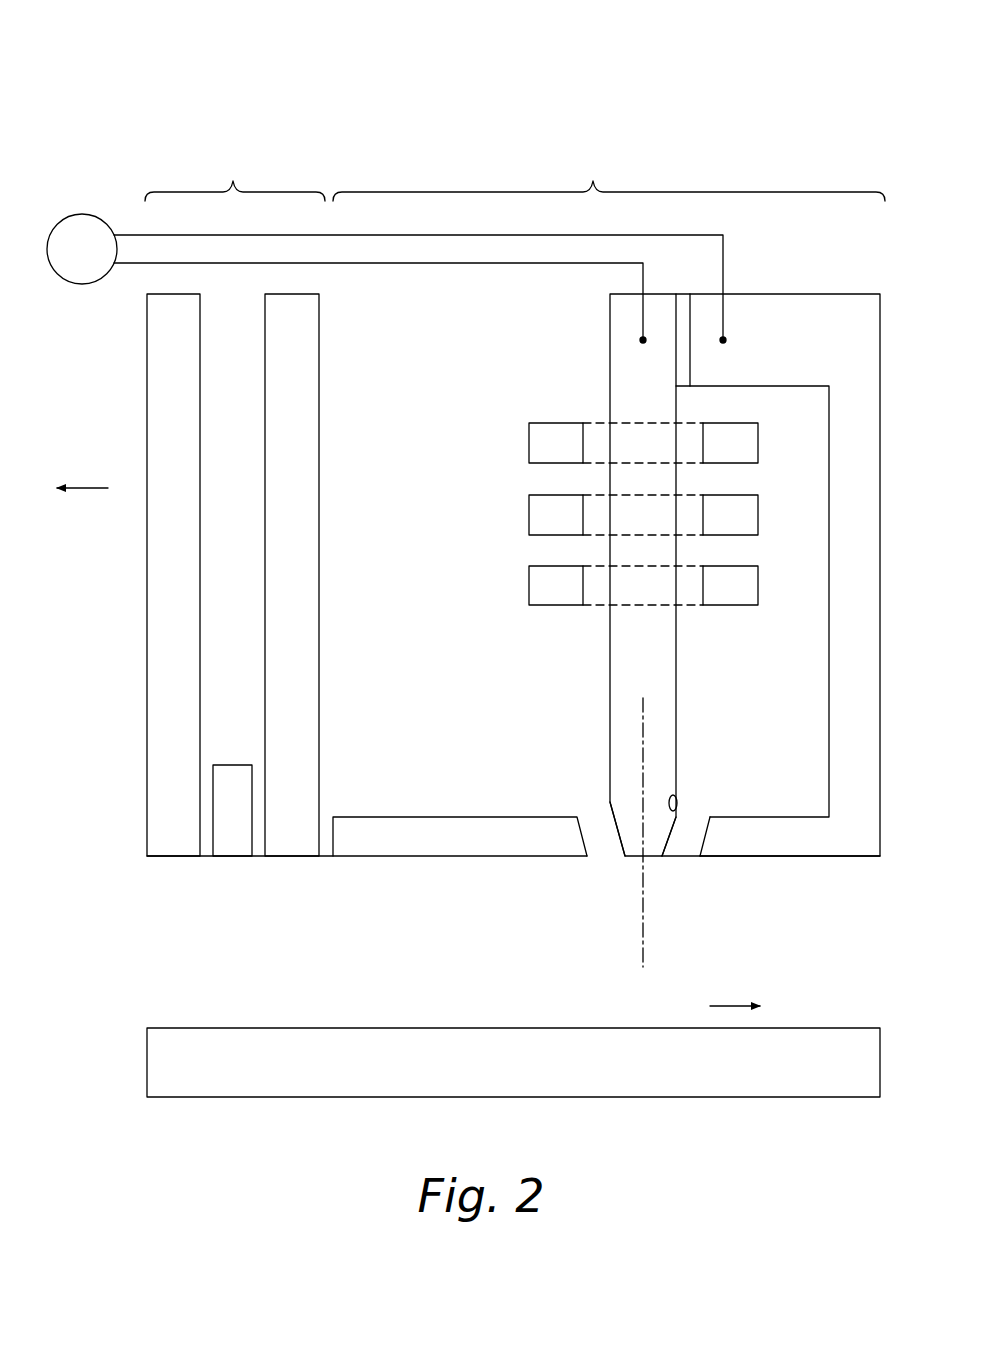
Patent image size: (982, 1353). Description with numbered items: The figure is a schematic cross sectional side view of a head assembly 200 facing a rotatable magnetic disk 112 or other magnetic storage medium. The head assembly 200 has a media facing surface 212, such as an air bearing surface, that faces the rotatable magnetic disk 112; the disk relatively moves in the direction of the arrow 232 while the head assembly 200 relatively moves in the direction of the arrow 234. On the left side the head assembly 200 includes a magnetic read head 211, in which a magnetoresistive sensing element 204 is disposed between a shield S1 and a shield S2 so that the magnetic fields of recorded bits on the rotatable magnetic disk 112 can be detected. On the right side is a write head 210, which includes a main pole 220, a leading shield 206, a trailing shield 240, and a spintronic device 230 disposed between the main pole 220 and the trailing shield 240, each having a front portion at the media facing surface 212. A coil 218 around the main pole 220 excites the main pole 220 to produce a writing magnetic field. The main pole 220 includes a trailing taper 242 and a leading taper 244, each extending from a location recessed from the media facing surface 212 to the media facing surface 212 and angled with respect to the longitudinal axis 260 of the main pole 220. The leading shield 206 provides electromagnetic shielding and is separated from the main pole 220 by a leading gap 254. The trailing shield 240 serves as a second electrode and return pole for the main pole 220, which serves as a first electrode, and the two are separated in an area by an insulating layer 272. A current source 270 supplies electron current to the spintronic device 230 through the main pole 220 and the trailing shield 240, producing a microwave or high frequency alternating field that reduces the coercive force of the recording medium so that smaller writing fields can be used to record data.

The head assembly 200 is at (143, 38).
The current source 270 is at (82, 213).
The magnetic read head 211 is at (235, 175).
The write head 210 is at (516, 502).
The insulating layer 272 is at (680, 302).
The shield S1 is at (170, 858).
The sensing element 204 is at (228, 858).
The shield S2 is at (295, 858).
The leading shield 206 is at (388, 858).
The trailing shield 240 is at (852, 842).
The main pole 220 is at (661, 658).
The coil 218 is at (557, 606).
The leading taper 244 is at (616, 830).
The trailing taper 242 is at (677, 798).
The spintronic device 230 is at (682, 842).
The leading gap 254 is at (603, 853).
The media facing surface 212 is at (760, 858).
The longitudinal axis 260 is at (641, 952).
The arrow 234 is at (90, 486).
The arrow 232 is at (727, 1005).
The rotatable magnetic disk 112 is at (147, 1053).